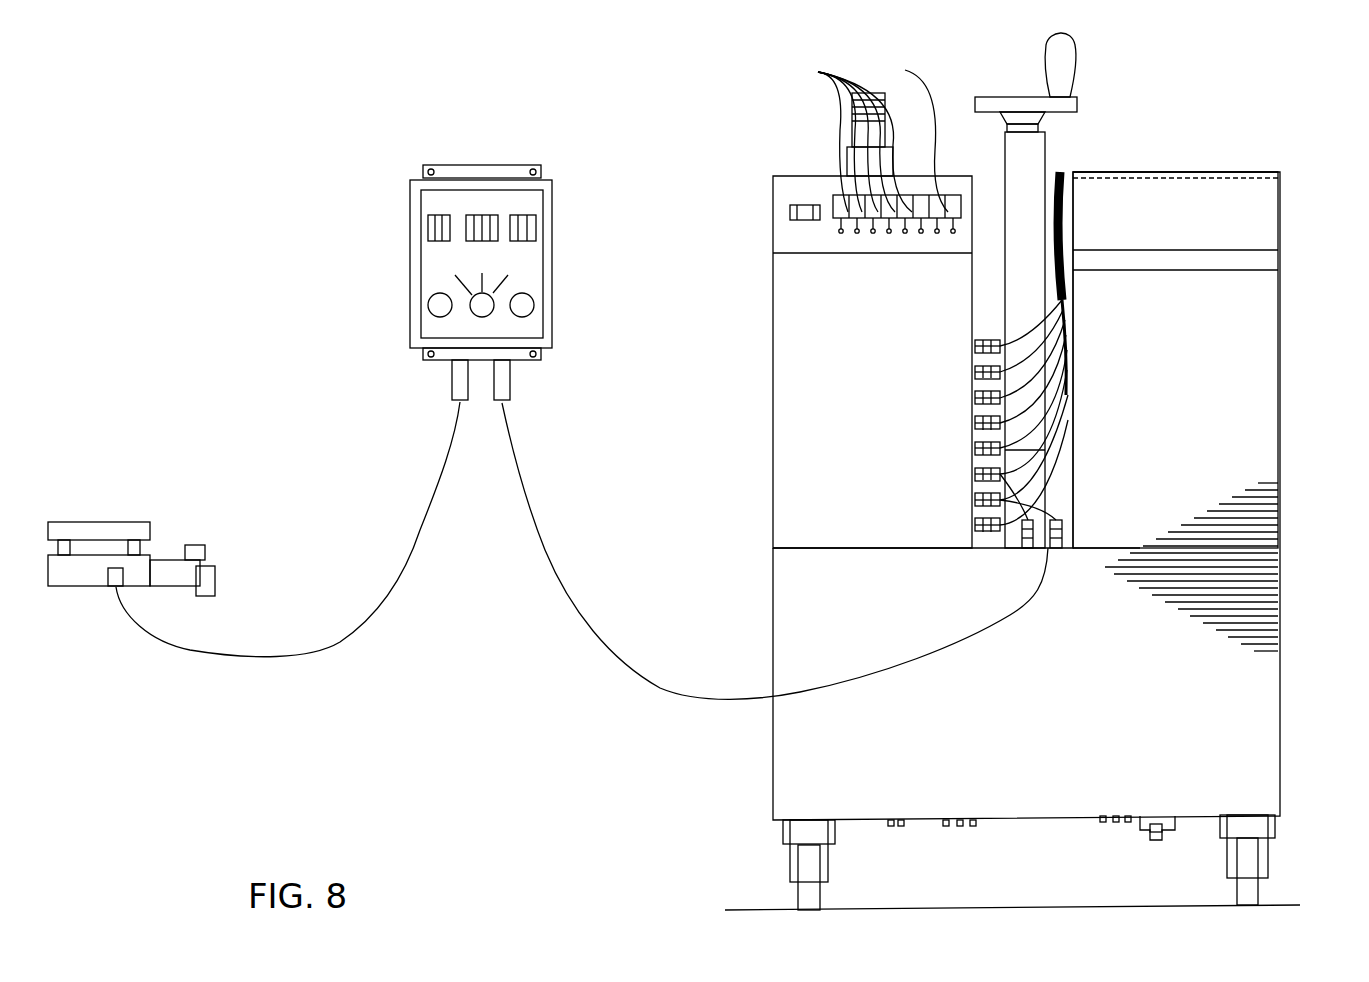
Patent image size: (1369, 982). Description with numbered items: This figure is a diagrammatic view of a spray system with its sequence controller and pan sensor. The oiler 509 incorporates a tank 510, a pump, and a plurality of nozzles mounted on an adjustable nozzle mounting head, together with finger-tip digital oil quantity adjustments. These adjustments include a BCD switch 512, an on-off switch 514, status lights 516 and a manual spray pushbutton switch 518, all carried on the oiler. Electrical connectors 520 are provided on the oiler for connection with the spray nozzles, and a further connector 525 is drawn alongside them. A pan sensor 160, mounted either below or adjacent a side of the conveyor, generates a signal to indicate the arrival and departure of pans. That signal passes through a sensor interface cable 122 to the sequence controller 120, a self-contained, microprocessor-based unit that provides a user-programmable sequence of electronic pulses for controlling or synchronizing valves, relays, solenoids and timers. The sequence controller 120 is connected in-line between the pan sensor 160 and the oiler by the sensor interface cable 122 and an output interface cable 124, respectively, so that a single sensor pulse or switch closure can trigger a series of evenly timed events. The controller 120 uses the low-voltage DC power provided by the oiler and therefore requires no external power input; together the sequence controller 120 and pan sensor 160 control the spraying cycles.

The sequence controller 120 is at (404, 282).
The sensor interface cable 122 is at (372, 620).
The output interface cable 124 is at (583, 595).
The pan sensor 160 is at (103, 508).
The oiler 509 is at (1120, 160).
The tank 510 is at (1240, 197).
The BCD switch 512 is at (792, 212).
The on-off switch 514 is at (836, 203).
The status lights 516 is at (842, 135).
The manual spray pushbutton switch 518 is at (904, 135).
The electrical connectors 520 is at (975, 346).
The connector 525 is at (975, 474).